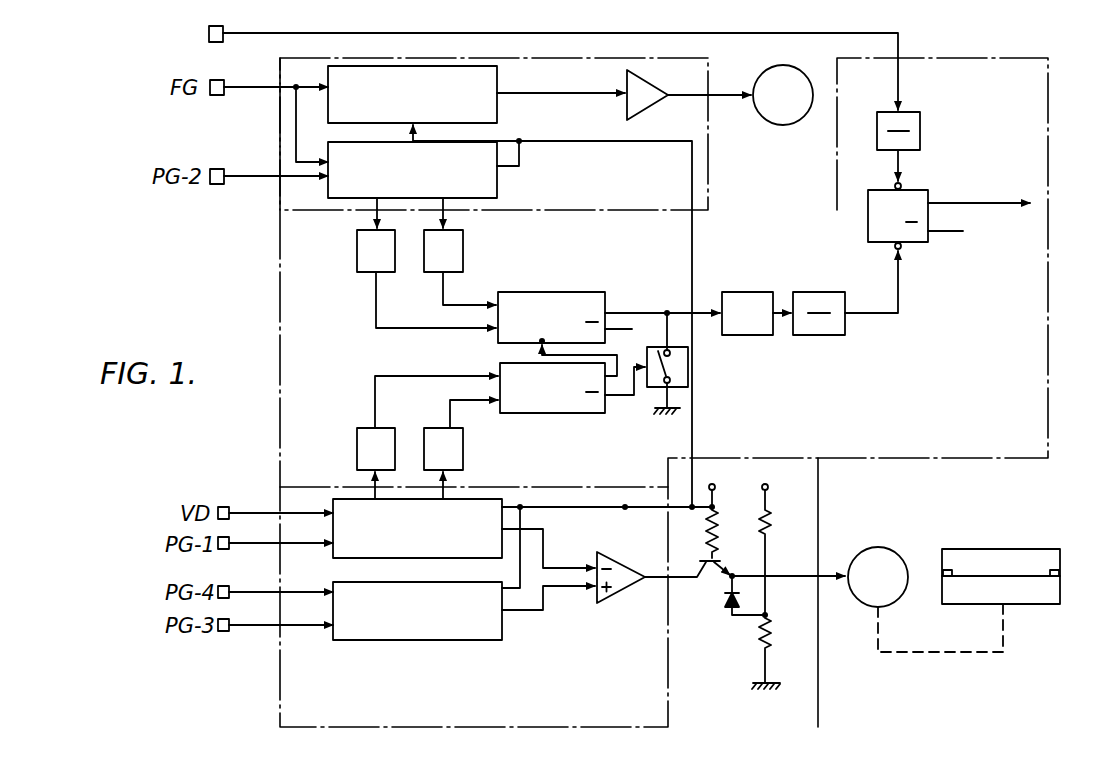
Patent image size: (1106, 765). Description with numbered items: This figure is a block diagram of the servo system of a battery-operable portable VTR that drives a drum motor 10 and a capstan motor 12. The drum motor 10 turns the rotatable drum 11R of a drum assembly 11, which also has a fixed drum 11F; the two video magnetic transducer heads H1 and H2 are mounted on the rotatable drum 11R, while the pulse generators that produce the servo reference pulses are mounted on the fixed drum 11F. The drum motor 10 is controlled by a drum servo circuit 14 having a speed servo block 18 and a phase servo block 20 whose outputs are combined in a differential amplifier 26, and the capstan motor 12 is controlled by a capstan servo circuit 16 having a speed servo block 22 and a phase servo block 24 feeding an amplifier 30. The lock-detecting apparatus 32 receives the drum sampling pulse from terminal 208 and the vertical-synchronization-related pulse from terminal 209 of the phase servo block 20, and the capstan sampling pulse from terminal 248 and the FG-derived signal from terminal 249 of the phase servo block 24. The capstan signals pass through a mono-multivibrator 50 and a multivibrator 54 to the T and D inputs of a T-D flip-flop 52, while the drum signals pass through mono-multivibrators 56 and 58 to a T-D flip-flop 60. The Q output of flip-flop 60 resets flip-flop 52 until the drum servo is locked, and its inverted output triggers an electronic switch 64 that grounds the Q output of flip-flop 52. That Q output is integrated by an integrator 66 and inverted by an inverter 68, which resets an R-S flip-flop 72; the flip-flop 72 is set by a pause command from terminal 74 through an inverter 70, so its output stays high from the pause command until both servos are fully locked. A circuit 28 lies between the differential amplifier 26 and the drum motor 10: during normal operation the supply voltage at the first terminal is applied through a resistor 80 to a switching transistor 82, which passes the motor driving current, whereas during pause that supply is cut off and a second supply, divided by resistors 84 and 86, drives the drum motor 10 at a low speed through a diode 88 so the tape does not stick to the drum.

The pause command signal source terminal 74 is at (209, 29).
The speed servo block 22 is at (476, 94).
The phase servo block 24 is at (510, 316).
The capstan servo circuit 16 is at (598, 181).
The amplifier 30 is at (655, 107).
The capstan motor 12 is at (790, 124).
The inverter 70 is at (920, 127).
The R-S flip-flop 72 is at (930, 192).
The terminal 249 is at (377, 213).
The terminal 248 is at (443, 213).
The multivibrator 54 is at (357, 251).
The mono-multivibrator 50 is at (463, 240).
The T-D flip-flop 52 is at (555, 292).
The T-D flip-flop 60 is at (583, 413).
The mono-multivibrator 56 is at (357, 438).
The mono-multivibrator 58 is at (463, 441).
The electronic switch 64 is at (650, 388).
The integrator 66 is at (760, 292).
The inverter 68 is at (822, 292).
The apparatus 32 is at (935, 434).
The phase servo block 20 is at (524, 533).
The speed servo block 18 is at (464, 573).
The terminal 208 is at (372, 481).
The terminal 209 is at (446, 481).
The drum servo circuit 14 is at (474, 690).
The differential amplifier 26 is at (626, 591).
The resistor 80 is at (722, 511).
The switching transistor 82 is at (721, 571).
The diode 88 is at (726, 604).
The resistor 84 is at (768, 516).
The resistor 86 is at (768, 627).
The circuit 28 is at (786, 706).
The drum motor 10 is at (886, 548).
The drum assembly 11 is at (1011, 535).
The rotatable drum 11R is at (1047, 549).
The fixed drum 11F is at (972, 604).
The video magnetic transducer head H1 is at (943, 573).
The video magnetic transducer head H2 is at (1059, 573).